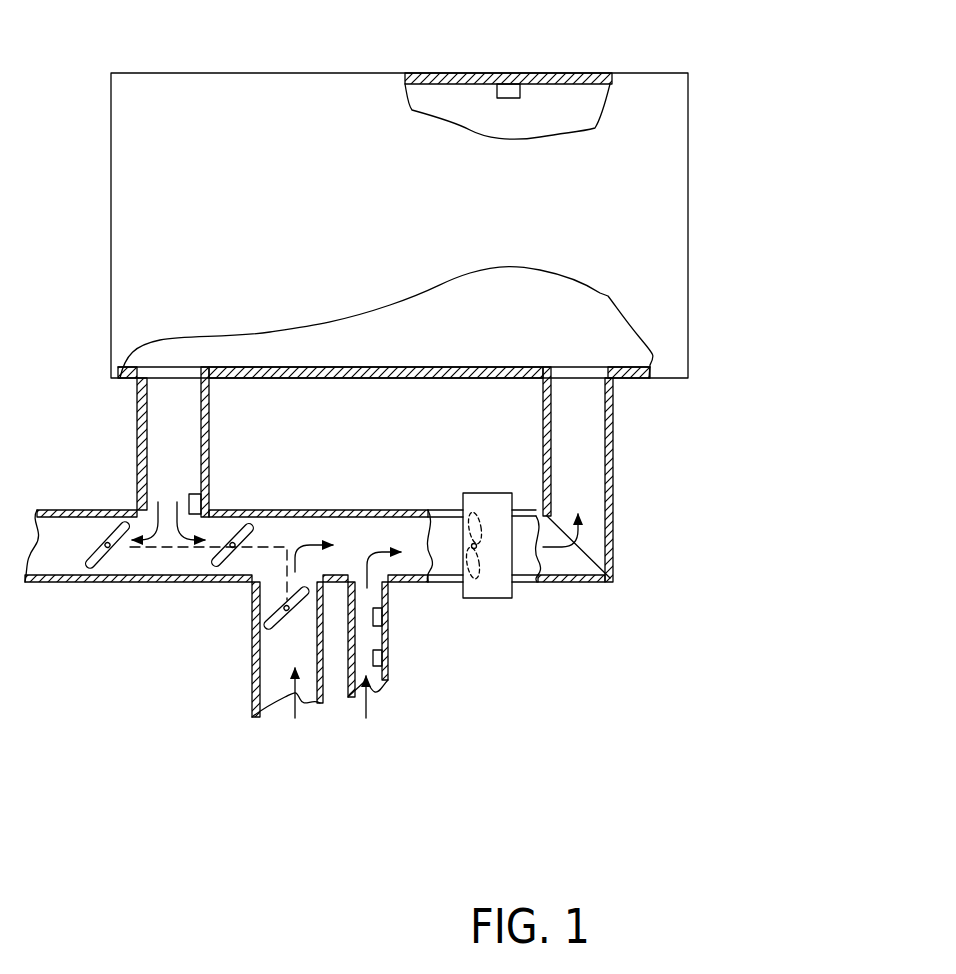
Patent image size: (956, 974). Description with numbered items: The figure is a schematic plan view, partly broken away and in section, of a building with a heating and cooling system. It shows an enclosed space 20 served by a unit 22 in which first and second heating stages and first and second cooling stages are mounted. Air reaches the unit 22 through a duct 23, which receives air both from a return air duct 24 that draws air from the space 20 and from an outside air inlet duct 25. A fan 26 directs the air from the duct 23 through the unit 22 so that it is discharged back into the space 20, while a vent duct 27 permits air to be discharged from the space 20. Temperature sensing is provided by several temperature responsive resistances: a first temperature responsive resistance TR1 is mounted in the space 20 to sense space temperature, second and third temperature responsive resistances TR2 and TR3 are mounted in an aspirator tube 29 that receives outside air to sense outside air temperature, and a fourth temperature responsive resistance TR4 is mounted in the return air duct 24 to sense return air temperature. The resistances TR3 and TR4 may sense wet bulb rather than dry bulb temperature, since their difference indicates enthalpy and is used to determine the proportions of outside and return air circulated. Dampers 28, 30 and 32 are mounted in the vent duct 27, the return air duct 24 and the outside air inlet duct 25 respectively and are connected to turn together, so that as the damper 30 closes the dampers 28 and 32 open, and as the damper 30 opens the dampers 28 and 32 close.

The enclosed space 20 is at (668, 267).
The first temperature responsive resistance TR1 is at (508, 90).
The return air duct 24 is at (175, 412).
The fourth temperature responsive resistance TR4 is at (197, 505).
The vent duct 27 is at (84, 592).
The damper 28 is at (118, 530).
The damper 30 is at (232, 565).
The damper 32 is at (280, 632).
The outside air inlet duct 25 is at (265, 668).
The aspirator tube 29 is at (372, 682).
The second temperature responsive resistance TR2 is at (382, 614).
The third temperature responsive resistance TR3 is at (382, 654).
The duct 23 is at (453, 527).
The unit 22 is at (486, 590).
The fan 26 is at (480, 522).